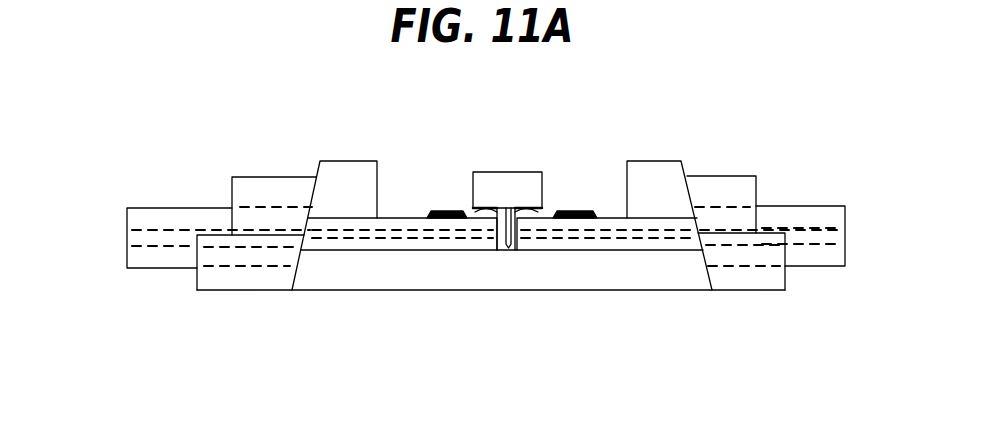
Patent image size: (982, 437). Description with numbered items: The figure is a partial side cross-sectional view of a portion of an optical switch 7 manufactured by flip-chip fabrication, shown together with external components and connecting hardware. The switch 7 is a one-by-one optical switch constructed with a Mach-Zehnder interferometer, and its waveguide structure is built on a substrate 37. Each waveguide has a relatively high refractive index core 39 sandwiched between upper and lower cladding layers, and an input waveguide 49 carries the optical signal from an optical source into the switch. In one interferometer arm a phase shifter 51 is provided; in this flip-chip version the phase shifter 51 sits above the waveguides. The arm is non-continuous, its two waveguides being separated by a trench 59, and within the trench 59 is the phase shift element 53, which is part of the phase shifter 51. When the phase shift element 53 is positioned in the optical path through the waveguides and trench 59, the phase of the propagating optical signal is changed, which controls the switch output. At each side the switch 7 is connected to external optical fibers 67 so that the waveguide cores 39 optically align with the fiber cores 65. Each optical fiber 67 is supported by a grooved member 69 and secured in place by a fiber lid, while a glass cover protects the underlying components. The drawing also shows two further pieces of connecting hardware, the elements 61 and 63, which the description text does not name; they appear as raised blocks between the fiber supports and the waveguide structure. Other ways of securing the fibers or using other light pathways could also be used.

The optical switch 7 is at (642, 312).
The substrate 37 is at (425, 272).
The core 39 is at (343, 237).
The input waveguide 49 is at (387, 218).
The phase shifter 51 is at (496, 170).
The phase shift element 53 is at (511, 245).
The trench 59 is at (515, 250).
The support post 61 is at (350, 158).
The connector block 63 is at (278, 187).
The fiber core 65 is at (186, 237).
The optical fiber 67 is at (142, 217).
The grooved member 69 is at (228, 283).